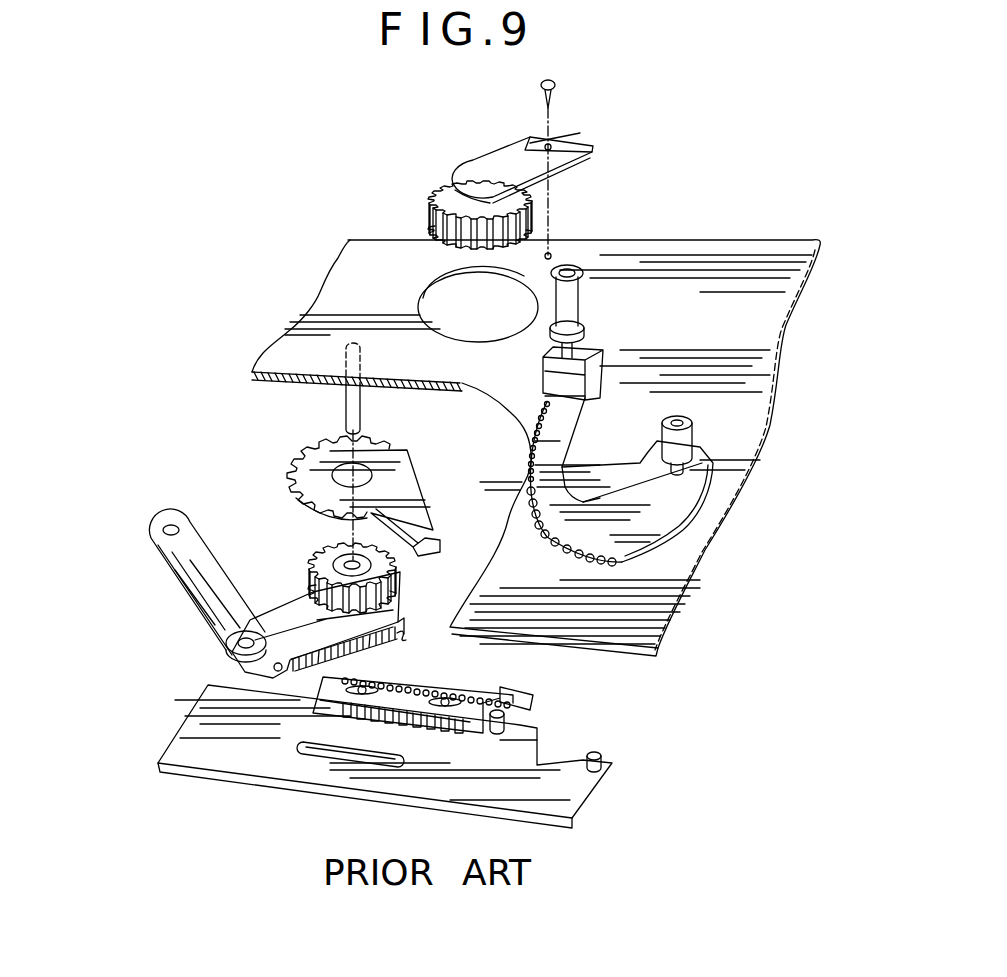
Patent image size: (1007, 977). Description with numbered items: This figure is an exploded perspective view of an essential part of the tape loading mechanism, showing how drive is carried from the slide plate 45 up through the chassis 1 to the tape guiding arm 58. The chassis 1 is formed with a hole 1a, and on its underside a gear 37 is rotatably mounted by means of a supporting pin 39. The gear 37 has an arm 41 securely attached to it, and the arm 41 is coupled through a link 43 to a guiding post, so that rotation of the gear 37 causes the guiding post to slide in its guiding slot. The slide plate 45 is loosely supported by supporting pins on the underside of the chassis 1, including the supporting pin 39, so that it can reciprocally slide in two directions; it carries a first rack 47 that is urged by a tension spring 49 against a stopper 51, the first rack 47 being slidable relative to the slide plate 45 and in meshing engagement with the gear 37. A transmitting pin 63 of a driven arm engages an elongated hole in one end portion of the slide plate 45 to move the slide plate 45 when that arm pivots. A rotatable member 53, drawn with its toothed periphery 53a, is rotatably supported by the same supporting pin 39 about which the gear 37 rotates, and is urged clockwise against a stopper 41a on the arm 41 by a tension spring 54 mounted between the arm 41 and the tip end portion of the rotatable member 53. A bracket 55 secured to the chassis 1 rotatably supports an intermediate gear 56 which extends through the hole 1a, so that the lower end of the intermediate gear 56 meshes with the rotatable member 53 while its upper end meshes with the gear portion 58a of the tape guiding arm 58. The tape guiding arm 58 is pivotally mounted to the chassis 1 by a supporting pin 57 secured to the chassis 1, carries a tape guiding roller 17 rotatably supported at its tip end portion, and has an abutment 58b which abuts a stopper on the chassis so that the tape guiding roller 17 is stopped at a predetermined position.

The chassis 1 is at (320, 290).
The hole 1a is at (440, 300).
The tape guiding roller 17 is at (580, 302).
The gear 37 is at (323, 548).
The supporting pin 39 is at (347, 407).
The arm 41 is at (268, 605).
The stopper 41a is at (226, 638).
The link 43 is at (190, 587).
The slide plate 45 is at (335, 756).
The first rack 47 is at (322, 749).
The tension spring 49 is at (460, 690).
The stopper 51 is at (508, 722).
The rotatable member 53 is at (317, 485).
The gear teeth 53a is at (320, 442).
The tension spring 54 is at (397, 632).
The bracket 55 is at (497, 157).
The intermediate gear 56 is at (427, 207).
The supporting pin 57 is at (692, 438).
The tape guiding arm 58 is at (573, 471).
The toothed portion 58a is at (537, 537).
The abutment 58b is at (612, 484).
The transmitting pin 63 is at (603, 757).